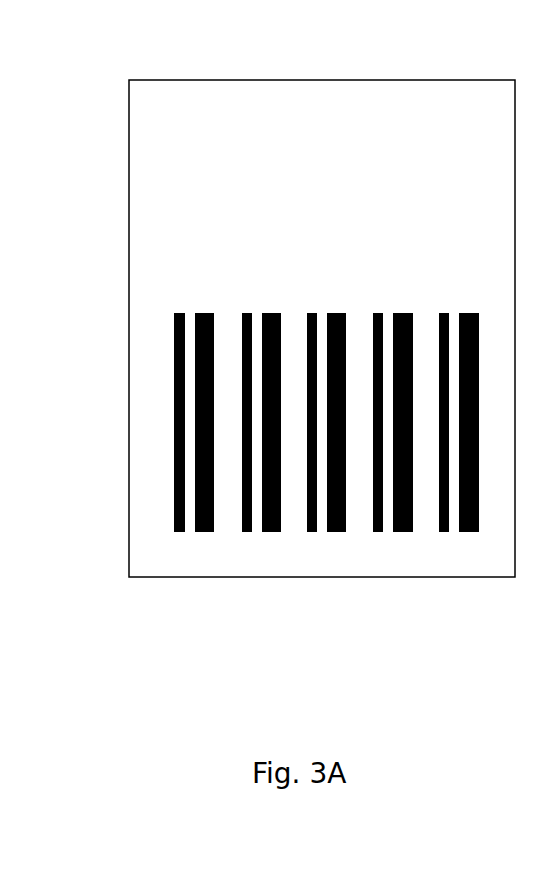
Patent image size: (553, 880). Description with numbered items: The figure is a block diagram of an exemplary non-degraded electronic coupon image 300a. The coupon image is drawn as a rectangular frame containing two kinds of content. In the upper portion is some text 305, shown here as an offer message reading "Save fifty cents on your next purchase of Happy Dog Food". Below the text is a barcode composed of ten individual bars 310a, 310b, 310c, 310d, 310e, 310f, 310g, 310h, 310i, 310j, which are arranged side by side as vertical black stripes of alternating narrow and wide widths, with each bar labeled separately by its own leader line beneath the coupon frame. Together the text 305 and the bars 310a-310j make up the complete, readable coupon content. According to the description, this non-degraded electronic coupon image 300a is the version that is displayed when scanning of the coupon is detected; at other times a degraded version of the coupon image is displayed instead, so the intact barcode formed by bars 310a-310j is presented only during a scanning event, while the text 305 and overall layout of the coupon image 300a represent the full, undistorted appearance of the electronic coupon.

The non-degraded electronic coupon image 300a is at (321, 80).
The text 305 is at (168, 193).
The bar 310a is at (180, 532).
The bar 310b is at (205, 532).
The bar 310c is at (247, 532).
The bar 310d is at (272, 532).
The bar 310e is at (312, 532).
The bar 310f is at (337, 532).
The bar 310g is at (378, 532).
The bar 310h is at (403, 532).
The bar 310i is at (444, 532).
The bar 310j is at (469, 532).